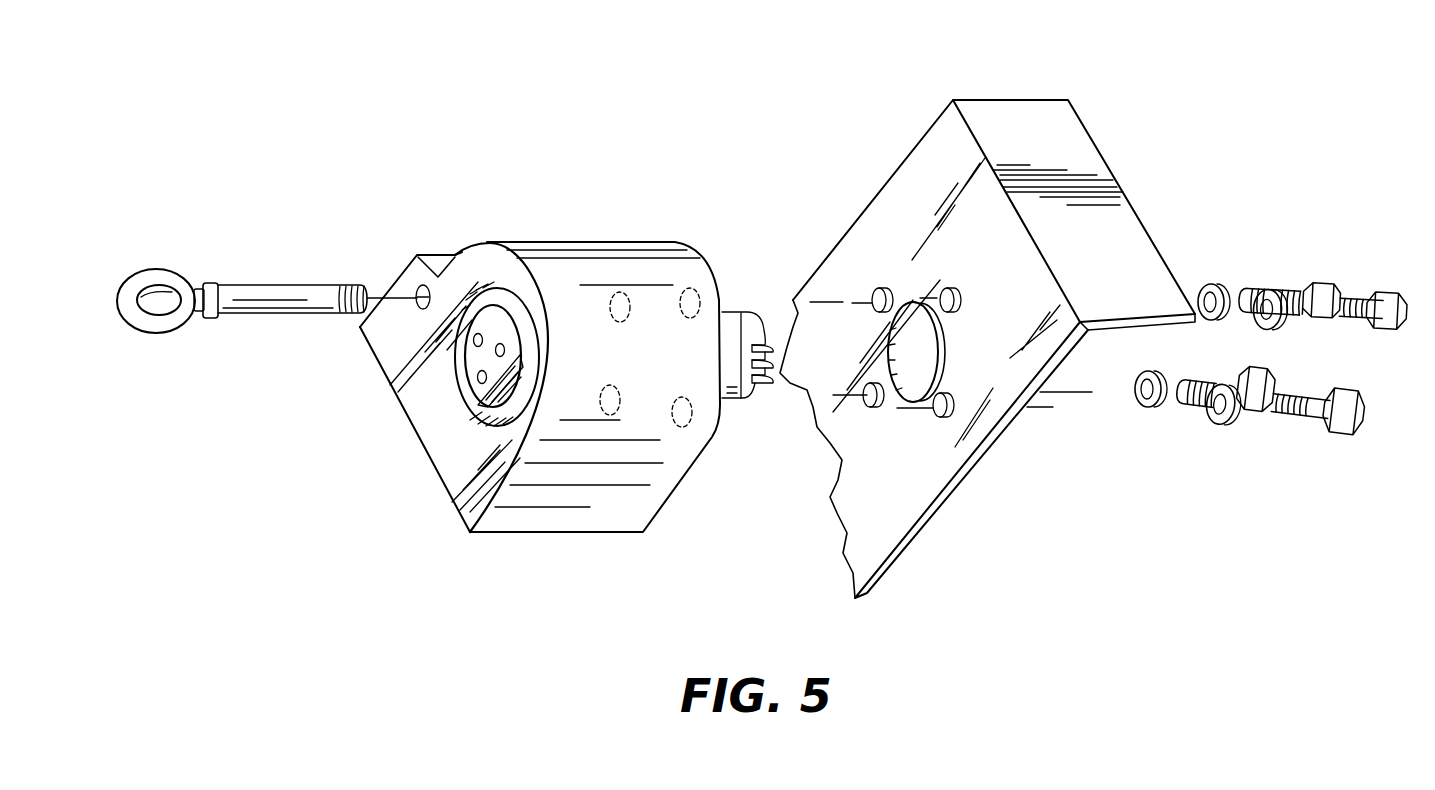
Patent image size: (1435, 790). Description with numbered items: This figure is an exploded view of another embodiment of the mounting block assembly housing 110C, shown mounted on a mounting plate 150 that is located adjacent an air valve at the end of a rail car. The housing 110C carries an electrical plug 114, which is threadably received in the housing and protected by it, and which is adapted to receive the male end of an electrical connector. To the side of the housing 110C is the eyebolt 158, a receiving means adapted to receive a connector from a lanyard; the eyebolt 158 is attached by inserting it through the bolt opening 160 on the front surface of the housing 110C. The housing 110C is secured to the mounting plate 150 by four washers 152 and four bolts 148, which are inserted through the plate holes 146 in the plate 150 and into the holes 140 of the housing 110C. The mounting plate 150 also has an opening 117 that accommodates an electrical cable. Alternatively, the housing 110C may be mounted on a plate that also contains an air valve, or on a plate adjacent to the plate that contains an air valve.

The mounting block assembly housing 110C is at (605, 277).
The electrical plug 114 is at (467, 417).
The opening 117 is at (922, 340).
The holes 140 is at (697, 300).
The plate holes 146 is at (948, 410).
The bolts 148 is at (1363, 297).
The mounting plate 150 is at (1018, 120).
The washers 152 is at (1215, 283).
The eyebolt 158 is at (178, 322).
The bolt opening 160 is at (420, 292).